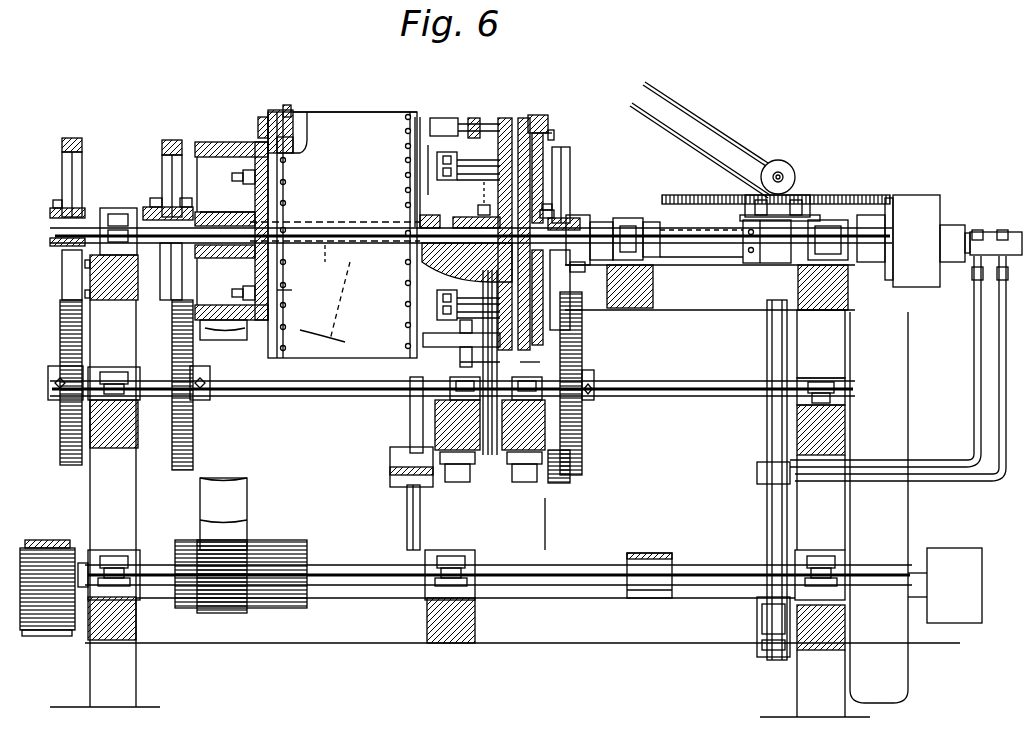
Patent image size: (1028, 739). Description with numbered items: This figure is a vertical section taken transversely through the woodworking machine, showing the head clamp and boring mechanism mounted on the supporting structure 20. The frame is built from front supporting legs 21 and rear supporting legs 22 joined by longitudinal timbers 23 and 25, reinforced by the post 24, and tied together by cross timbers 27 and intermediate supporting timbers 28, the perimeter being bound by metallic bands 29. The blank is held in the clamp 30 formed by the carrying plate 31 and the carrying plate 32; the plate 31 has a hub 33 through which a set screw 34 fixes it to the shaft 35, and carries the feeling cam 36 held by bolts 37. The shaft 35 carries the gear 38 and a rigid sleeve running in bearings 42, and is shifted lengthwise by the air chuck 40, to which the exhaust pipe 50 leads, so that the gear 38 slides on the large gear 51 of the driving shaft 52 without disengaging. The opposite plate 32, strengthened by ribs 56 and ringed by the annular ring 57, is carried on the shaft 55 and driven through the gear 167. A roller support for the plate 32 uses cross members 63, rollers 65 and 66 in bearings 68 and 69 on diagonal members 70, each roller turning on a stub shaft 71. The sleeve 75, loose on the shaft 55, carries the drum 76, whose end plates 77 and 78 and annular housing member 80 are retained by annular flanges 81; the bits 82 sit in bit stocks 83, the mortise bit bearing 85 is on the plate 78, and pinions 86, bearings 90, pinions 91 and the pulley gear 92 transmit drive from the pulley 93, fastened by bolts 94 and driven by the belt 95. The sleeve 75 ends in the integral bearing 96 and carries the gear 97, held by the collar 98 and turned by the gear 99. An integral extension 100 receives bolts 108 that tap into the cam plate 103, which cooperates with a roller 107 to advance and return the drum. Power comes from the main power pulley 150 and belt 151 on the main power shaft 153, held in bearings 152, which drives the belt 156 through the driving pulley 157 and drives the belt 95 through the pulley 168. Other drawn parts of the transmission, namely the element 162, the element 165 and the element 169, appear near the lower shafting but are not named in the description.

The supporting structure 20 is at (437, 648).
The front supporting legs 21 is at (138, 680).
The rear supporting legs 22 is at (640, 312).
The longitudinal timbers 23 is at (815, 255).
The post 24 is at (548, 510).
The longitudinal timbers 25 is at (767, 263).
The cross timbers 27 is at (118, 284).
The intermediate supporting timbers 28 is at (100, 428).
The metallic bands 29 is at (85, 263).
The clamp 30 is at (527, 118).
The carrying plate 31 is at (556, 150).
The carrying plate 32 is at (506, 120).
The hub 33 is at (560, 220).
The set screw 34 is at (552, 210).
The shaft 35 is at (585, 232).
The feeling cam 36 is at (545, 118).
The bolts 37 is at (545, 140).
The gear 38 is at (565, 165).
The air chuck 40 is at (912, 210).
The bearings 42 is at (652, 265).
The exhaust pipe 50 is at (978, 365).
The gear 51 is at (582, 342).
The driving shaft 52 is at (680, 382).
The shaft 55 is at (75, 233).
The ribs 56 is at (486, 196).
The annular ring 57 is at (490, 115).
The cross members 63 is at (505, 458).
The roller 65 is at (435, 432).
The roller 66 is at (438, 295).
The bearings 68 is at (425, 336).
The bearings 69 is at (452, 410).
The diagonal members 70 is at (440, 368).
The stub shafts 71 is at (268, 112).
The sleeve 75 is at (312, 245).
The drum 76 is at (357, 128).
The end plate 77 is at (284, 194).
The end plate 78 is at (418, 120).
The annular housing member 80 is at (440, 120).
The annular flanges 81 is at (287, 106).
The bits 82 is at (466, 170).
The bit stocks 83 is at (432, 178).
The bearing 85 is at (465, 116).
The pinions 86 is at (292, 148).
The bearings 90 is at (301, 118).
The pinions 91 is at (260, 126).
The pulley gear 92 is at (280, 294).
The pulley 93 is at (202, 142).
The bolts 94 is at (243, 178).
The belt 95 is at (228, 332).
The integral bearing 96 is at (422, 255).
The gear 97 is at (168, 145).
The collar 98 is at (155, 208).
The gear 99 is at (195, 430).
The integral extension 100 is at (62, 340).
The cam plate 103 is at (320, 336).
The roller 107 is at (68, 165).
The bolts 108 is at (405, 297).
The main power pulley 150 is at (48, 612).
The belt 151 is at (46, 636).
The bearings 152 is at (110, 552).
The main power shaft 153 is at (590, 587).
The belt 156 is at (765, 540).
The driving pulley 157 is at (666, 598).
The plate 162 is at (395, 470).
The pinion 165 is at (572, 478).
The gear 167 is at (407, 520).
The pulley 168 is at (290, 608).
The gear 169 is at (225, 548).